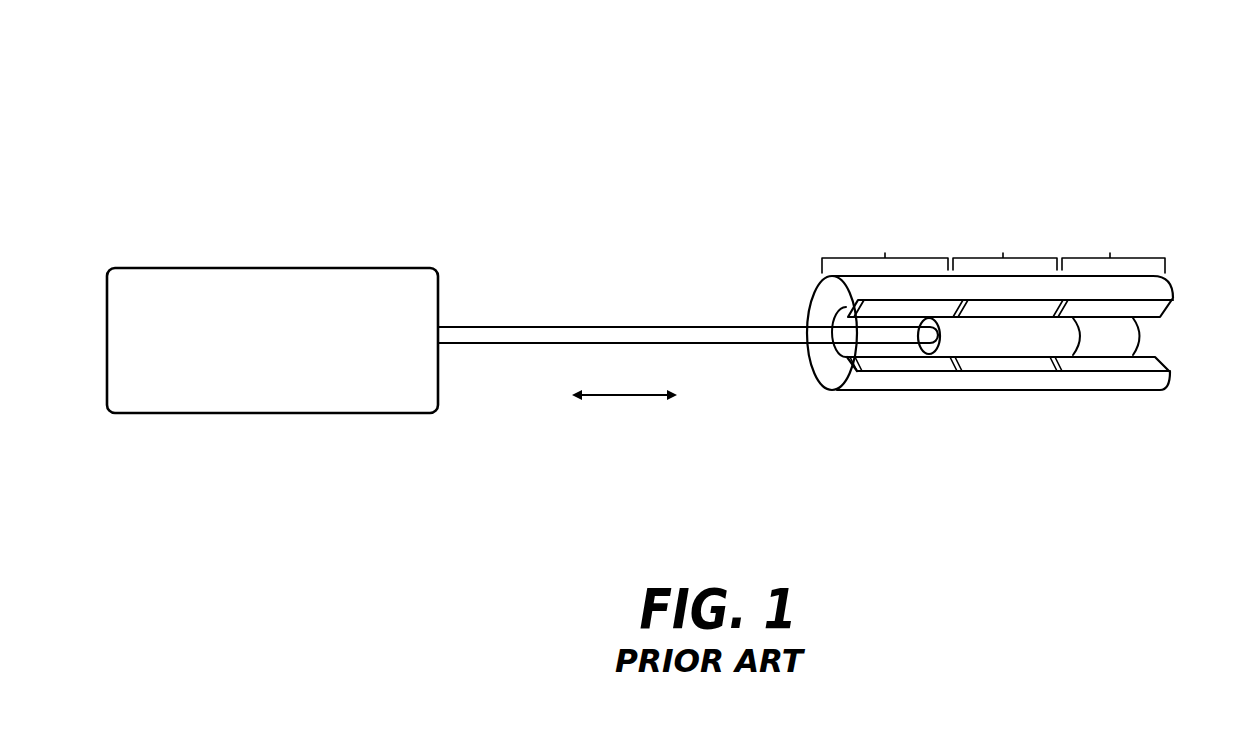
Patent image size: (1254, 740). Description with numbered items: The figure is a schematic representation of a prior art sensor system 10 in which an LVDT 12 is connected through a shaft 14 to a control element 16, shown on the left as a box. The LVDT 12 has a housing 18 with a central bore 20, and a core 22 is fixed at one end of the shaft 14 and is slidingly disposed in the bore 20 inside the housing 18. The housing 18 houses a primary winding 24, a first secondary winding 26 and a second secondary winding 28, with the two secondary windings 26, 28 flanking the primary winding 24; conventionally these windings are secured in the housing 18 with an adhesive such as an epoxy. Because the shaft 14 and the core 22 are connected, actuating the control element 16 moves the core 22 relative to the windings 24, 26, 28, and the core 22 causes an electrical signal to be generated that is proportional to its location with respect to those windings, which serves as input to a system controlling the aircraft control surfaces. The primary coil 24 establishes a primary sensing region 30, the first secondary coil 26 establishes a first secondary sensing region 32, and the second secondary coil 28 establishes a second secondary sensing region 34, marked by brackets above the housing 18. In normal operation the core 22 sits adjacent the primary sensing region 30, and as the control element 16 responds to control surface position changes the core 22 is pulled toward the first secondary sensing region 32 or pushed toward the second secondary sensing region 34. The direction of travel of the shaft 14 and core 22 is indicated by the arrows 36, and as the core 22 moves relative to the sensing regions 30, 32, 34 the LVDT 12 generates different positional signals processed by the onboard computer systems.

The sensor system 10 is at (598, 126).
The LVDT 12 is at (815, 278).
The shaft 14 is at (530, 333).
The control element 16 is at (313, 268).
The housing 18 is at (810, 300).
The central bore 20 is at (1125, 345).
The core 22 is at (1058, 335).
The primary winding 24 is at (1005, 364).
The first secondary winding 26 is at (897, 365).
The second secondary winding 28 is at (1105, 363).
The primary sensing region 30 is at (1005, 246).
The first secondary sensing region 32 is at (885, 247).
The second secondary sensing region 34 is at (1113, 247).
The arrows 36 is at (623, 397).